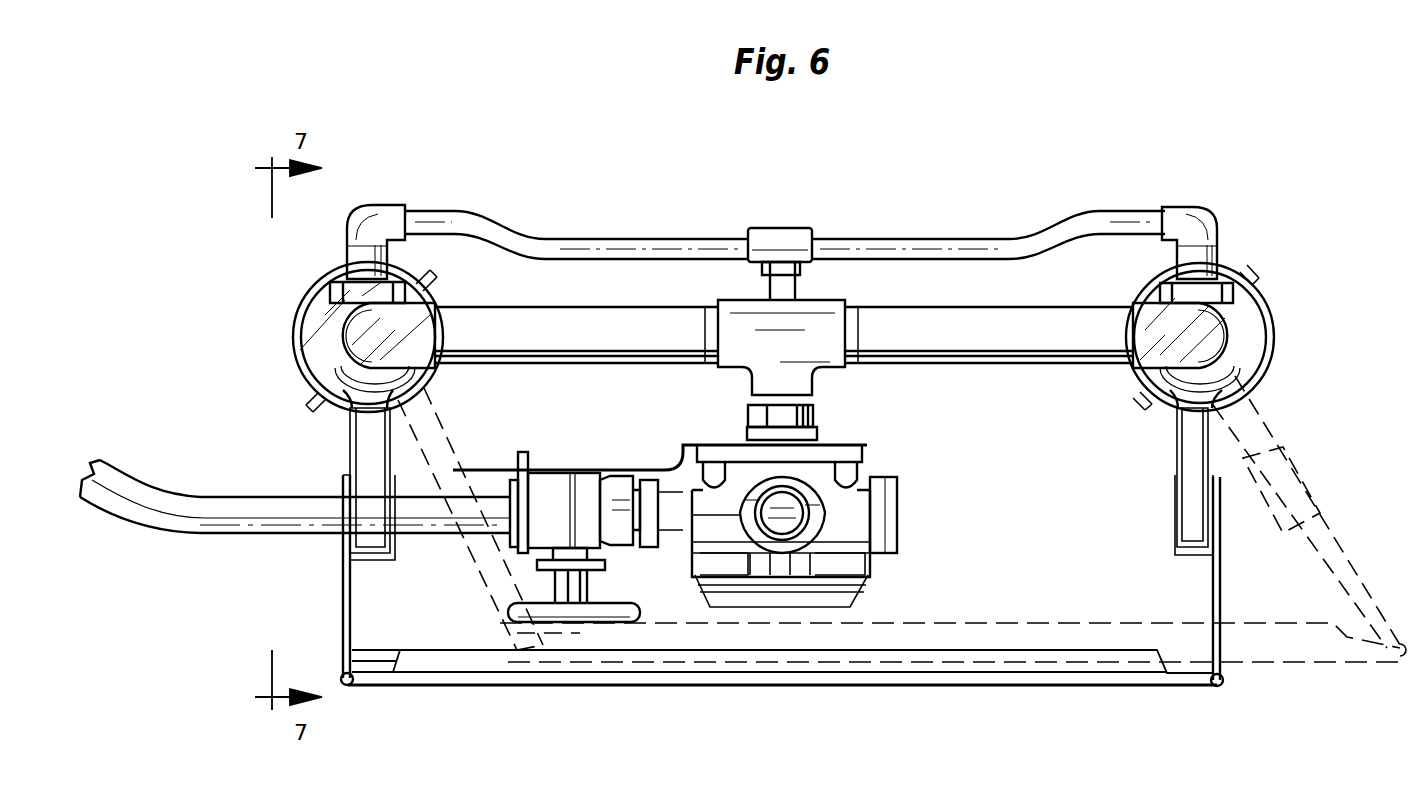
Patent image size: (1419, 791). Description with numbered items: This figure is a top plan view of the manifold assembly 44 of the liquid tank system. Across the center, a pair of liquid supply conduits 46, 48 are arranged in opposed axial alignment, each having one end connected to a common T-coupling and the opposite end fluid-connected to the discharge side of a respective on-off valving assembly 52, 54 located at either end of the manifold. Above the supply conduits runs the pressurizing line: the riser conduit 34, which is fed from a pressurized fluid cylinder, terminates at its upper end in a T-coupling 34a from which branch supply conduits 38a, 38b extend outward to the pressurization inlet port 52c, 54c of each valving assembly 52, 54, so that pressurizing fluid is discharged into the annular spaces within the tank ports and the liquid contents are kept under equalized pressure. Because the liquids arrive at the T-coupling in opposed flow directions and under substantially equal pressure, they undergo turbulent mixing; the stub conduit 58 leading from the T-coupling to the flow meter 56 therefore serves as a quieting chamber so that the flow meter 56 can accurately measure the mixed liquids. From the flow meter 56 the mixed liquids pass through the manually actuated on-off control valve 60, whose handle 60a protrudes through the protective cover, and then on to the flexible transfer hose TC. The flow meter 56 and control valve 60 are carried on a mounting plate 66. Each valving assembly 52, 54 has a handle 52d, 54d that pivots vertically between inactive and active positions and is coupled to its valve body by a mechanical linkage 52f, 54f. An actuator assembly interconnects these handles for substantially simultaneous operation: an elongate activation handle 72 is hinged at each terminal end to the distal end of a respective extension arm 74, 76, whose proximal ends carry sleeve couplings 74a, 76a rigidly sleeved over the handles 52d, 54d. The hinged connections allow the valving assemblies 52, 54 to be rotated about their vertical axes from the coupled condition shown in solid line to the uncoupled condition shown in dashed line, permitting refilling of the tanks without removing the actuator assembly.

The manifold assembly 44 is at (1098, 66).
The riser conduit 34 is at (792, 290).
The T-coupling 34a is at (775, 242).
The branch supply conduit 38a is at (966, 244).
The branch supply conduit 38b is at (562, 242).
The liquid supply conduit 46 is at (577, 344).
The liquid supply conduit 48 is at (978, 344).
The on-off valving assembly 52 is at (295, 362).
The pressurization inlet port 52c is at (348, 262).
The handle 52d is at (362, 442).
The mechanical linkage 52f is at (436, 276).
The on-off valving assembly 54 is at (1260, 304).
The pressurization inlet port 54c is at (1214, 250).
The handle 54d is at (1190, 460).
The mechanical linkage 54f is at (1252, 282).
The flow meter 56 is at (870, 488).
The stub conduit 58 is at (815, 412).
The on-off control valve 60 is at (582, 486).
The handle 60a is at (620, 622).
The mounting plate 66 is at (692, 447).
The activation handle 72 is at (835, 684).
The extension arm 74 is at (344, 600).
The sleeve coupling 74a is at (340, 480).
The extension arm 76 is at (1218, 586).
The sleeve coupling 76a is at (1175, 533).
The flexible transfer hose TC is at (112, 475).